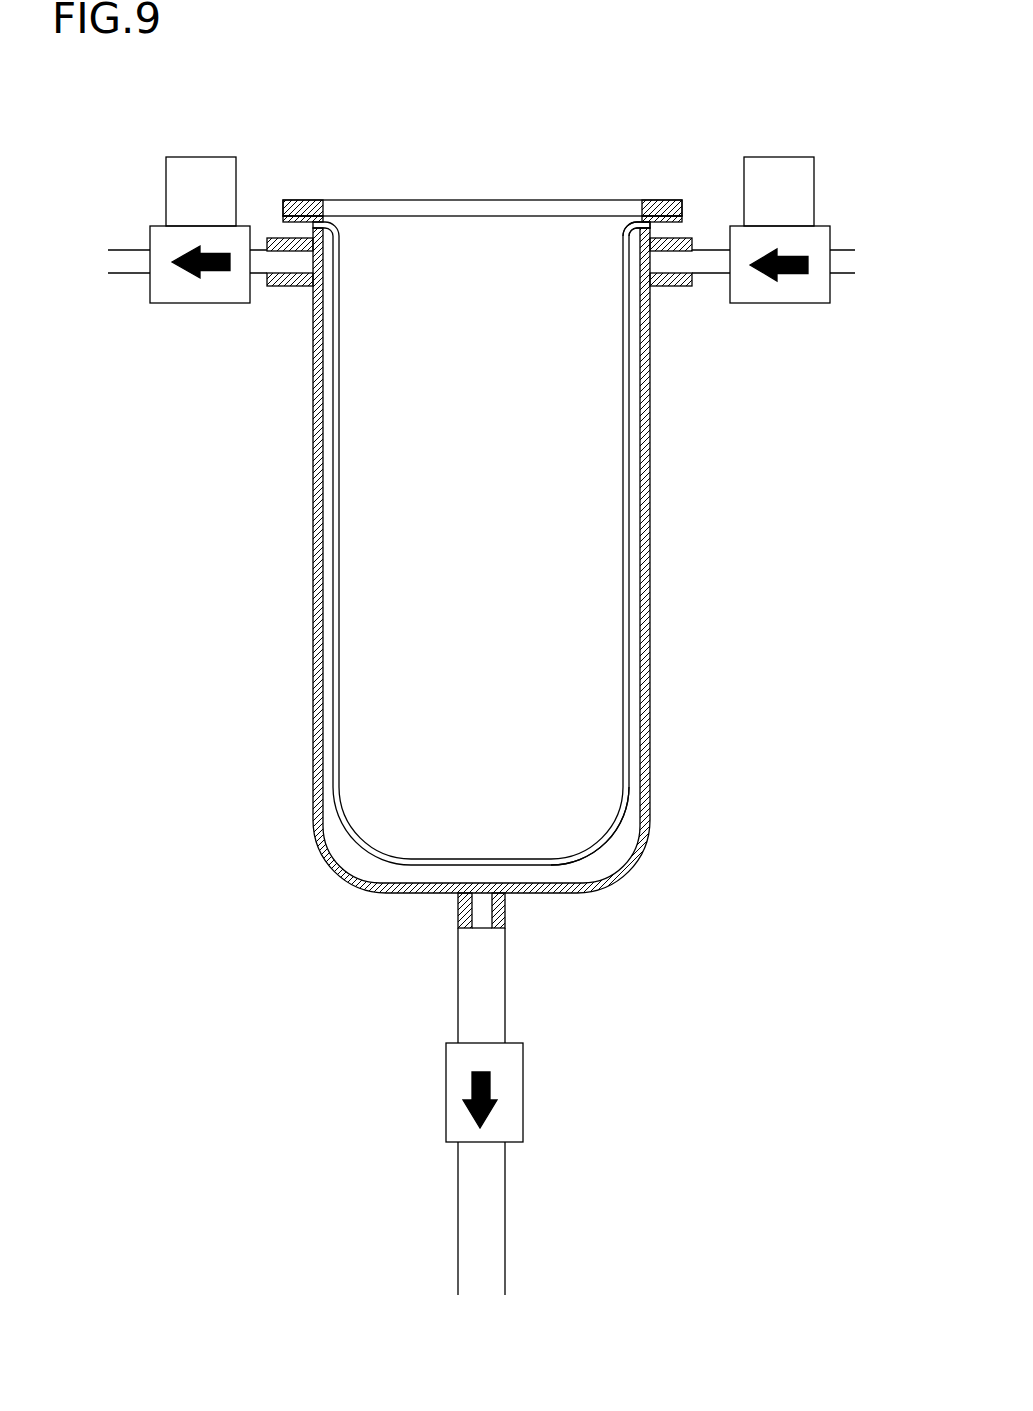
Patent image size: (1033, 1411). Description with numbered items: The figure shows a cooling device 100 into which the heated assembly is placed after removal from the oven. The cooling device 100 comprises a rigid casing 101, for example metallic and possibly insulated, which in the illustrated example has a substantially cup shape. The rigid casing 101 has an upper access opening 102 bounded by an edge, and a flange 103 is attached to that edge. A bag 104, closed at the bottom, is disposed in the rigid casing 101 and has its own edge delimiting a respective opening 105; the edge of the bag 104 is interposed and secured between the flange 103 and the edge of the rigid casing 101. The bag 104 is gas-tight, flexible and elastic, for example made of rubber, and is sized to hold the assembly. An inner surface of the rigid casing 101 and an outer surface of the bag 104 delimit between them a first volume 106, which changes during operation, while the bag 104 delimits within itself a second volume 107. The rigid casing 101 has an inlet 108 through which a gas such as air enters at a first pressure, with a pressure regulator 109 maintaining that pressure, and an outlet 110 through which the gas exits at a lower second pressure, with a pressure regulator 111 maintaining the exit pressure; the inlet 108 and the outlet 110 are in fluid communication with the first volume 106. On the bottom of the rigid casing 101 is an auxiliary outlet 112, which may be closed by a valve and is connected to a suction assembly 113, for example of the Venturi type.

The cooling device 100 is at (331, 124).
The rigid casing 101 is at (664, 485).
The upper access opening 102 is at (360, 260).
The flange 103 is at (665, 200).
The bag 104 is at (338, 557).
The opening 105 is at (627, 234).
The first volume 106 is at (618, 830).
The second volume 107 is at (587, 553).
The inlet 108 is at (683, 263).
The pressure regulator 109 is at (817, 238).
The outlet 110 is at (289, 262).
The pressure regulator 111 is at (188, 287).
The auxiliary outlet 112 is at (483, 917).
The suction assembly 113 is at (447, 1083).